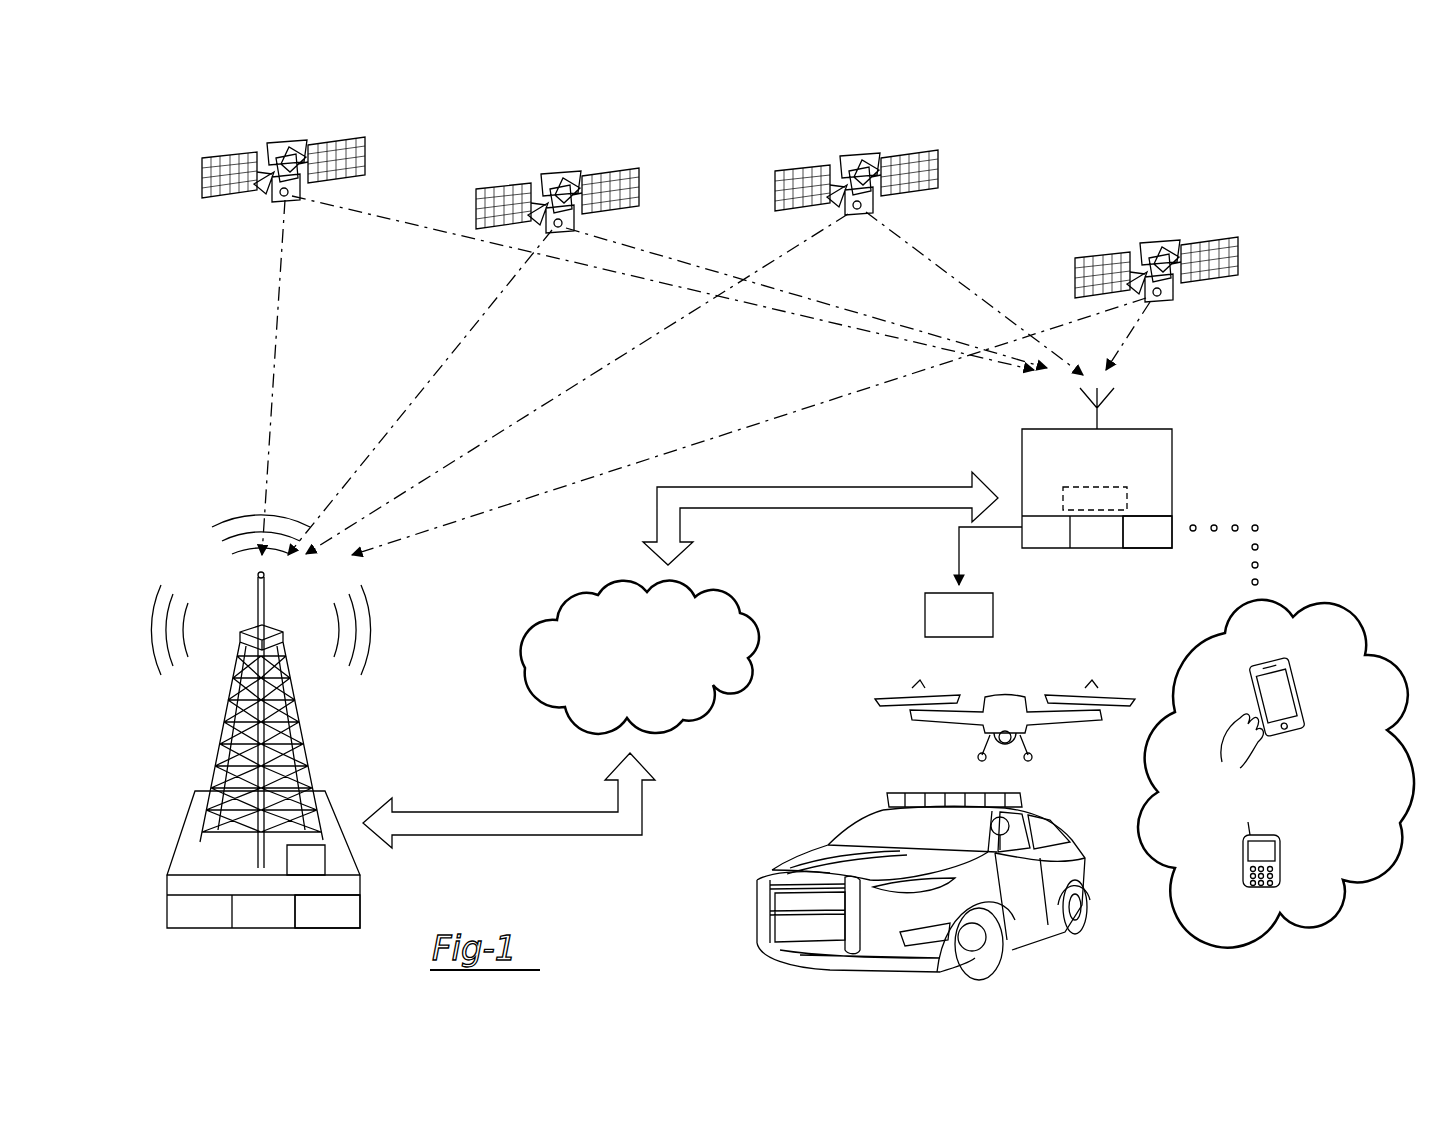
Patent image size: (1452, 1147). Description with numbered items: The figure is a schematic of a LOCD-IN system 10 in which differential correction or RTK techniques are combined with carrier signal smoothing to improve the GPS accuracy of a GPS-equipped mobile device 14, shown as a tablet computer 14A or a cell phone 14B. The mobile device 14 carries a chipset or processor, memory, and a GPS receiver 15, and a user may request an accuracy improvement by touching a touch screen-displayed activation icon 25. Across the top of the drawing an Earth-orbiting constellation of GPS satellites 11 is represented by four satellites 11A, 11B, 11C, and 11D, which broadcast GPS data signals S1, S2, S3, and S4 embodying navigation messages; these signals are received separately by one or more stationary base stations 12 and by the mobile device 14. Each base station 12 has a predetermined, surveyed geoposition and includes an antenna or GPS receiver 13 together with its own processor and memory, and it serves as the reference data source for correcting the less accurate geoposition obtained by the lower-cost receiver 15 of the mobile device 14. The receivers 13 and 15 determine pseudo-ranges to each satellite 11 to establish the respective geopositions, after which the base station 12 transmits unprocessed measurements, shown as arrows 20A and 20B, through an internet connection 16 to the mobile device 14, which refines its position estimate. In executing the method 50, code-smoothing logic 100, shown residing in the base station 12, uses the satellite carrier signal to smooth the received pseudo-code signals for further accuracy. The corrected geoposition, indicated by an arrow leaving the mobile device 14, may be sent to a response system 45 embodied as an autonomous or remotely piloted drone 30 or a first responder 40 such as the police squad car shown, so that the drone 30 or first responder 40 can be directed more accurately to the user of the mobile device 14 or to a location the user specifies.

The LOCD-IN system 10 is at (1133, 158).
The constellation of GPS satellites 11 is at (242, 70).
The GPS satellite 11A is at (288, 152).
The GPS satellite 11B is at (562, 183).
The GPS satellite 11C is at (855, 163).
The GPS satellite 11D is at (1160, 252).
The GPS data signal S1 is at (265, 278).
The GPS data signal S2 is at (665, 250).
The GPS data signal S3 is at (925, 260).
The GPS data signal S4 is at (1073, 305).
The stationary base station 12 is at (360, 887).
The GPS receiver 13 is at (192, 755).
The GPS-equipped mobile device 14 is at (1172, 472).
The tablet computer 14A is at (1298, 652).
The cell phone 14B is at (1280, 868).
The GPS receiver 15 is at (1143, 398).
The internet connection 16 is at (760, 628).
The unprocessed measurements 20A is at (887, 487).
The unprocessed measurements 20B is at (518, 812).
The activation icon 25 is at (1095, 498).
The drone 30 is at (980, 690).
The first responder 40 is at (828, 808).
The response system 45 is at (959, 615).
The method 50 is at (733, 722).
The code-smoothing logic 100 is at (306, 860).